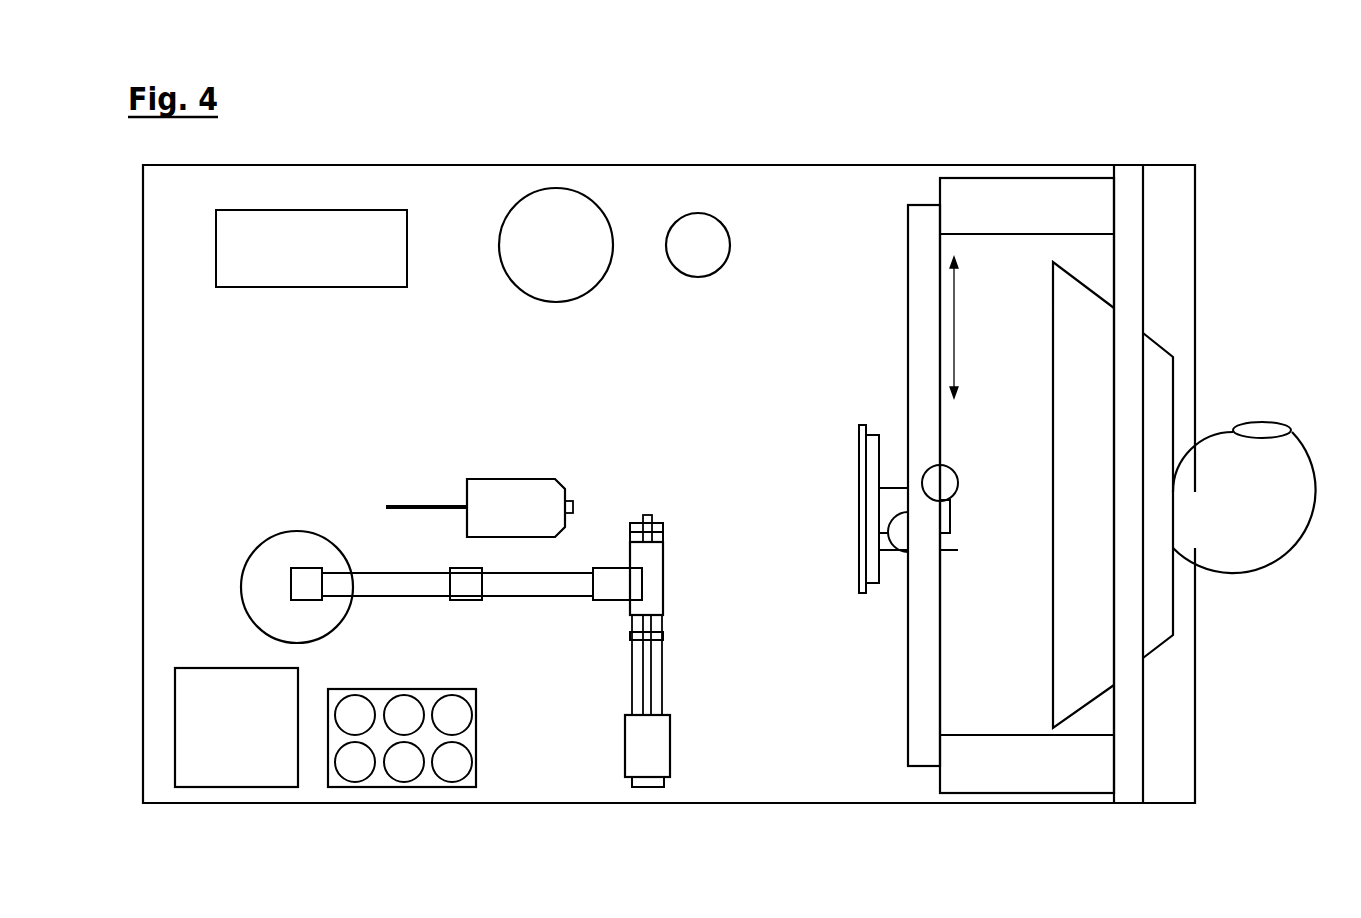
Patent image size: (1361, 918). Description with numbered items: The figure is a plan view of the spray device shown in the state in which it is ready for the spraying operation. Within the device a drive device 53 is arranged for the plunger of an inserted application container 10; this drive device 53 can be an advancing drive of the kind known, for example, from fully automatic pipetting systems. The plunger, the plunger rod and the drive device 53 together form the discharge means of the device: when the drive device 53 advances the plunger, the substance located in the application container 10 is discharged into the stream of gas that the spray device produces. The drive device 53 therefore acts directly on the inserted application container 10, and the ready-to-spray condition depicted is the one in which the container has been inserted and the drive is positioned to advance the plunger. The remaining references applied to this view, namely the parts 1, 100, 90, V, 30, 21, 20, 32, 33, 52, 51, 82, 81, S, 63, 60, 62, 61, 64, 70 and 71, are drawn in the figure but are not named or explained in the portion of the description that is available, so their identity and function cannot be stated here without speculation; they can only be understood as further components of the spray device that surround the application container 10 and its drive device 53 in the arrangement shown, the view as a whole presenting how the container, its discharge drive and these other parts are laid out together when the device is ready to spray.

The device housing 1 is at (893, 803).
The control unit 100 is at (295, 228).
The gas supply 90 is at (555, 235).
The valve V is at (710, 235).
The sample holder rotation drive 30 is at (278, 528).
The drive shaft 21 is at (434, 505).
The motor 20 is at (538, 495).
The arm 32 is at (532, 582).
The arm joint block 33 is at (612, 590).
The upper flange 52 is at (636, 520).
The application container 10 is at (664, 580).
The guide rods 51 is at (663, 662).
The drive device 53 is at (662, 732).
The reagent box 82 is at (228, 755).
The container rack 81 is at (433, 780).
The sensor S is at (858, 494).
The sensor mount plate 63 is at (878, 600).
The lifting device 60 is at (897, 325).
The lifting column 62 is at (898, 498).
The lifting housing 61 is at (1128, 690).
The clamp 64 is at (950, 548).
The exhaust wall 70 is at (1155, 388).
The exhaust pipe 71 is at (1237, 510).